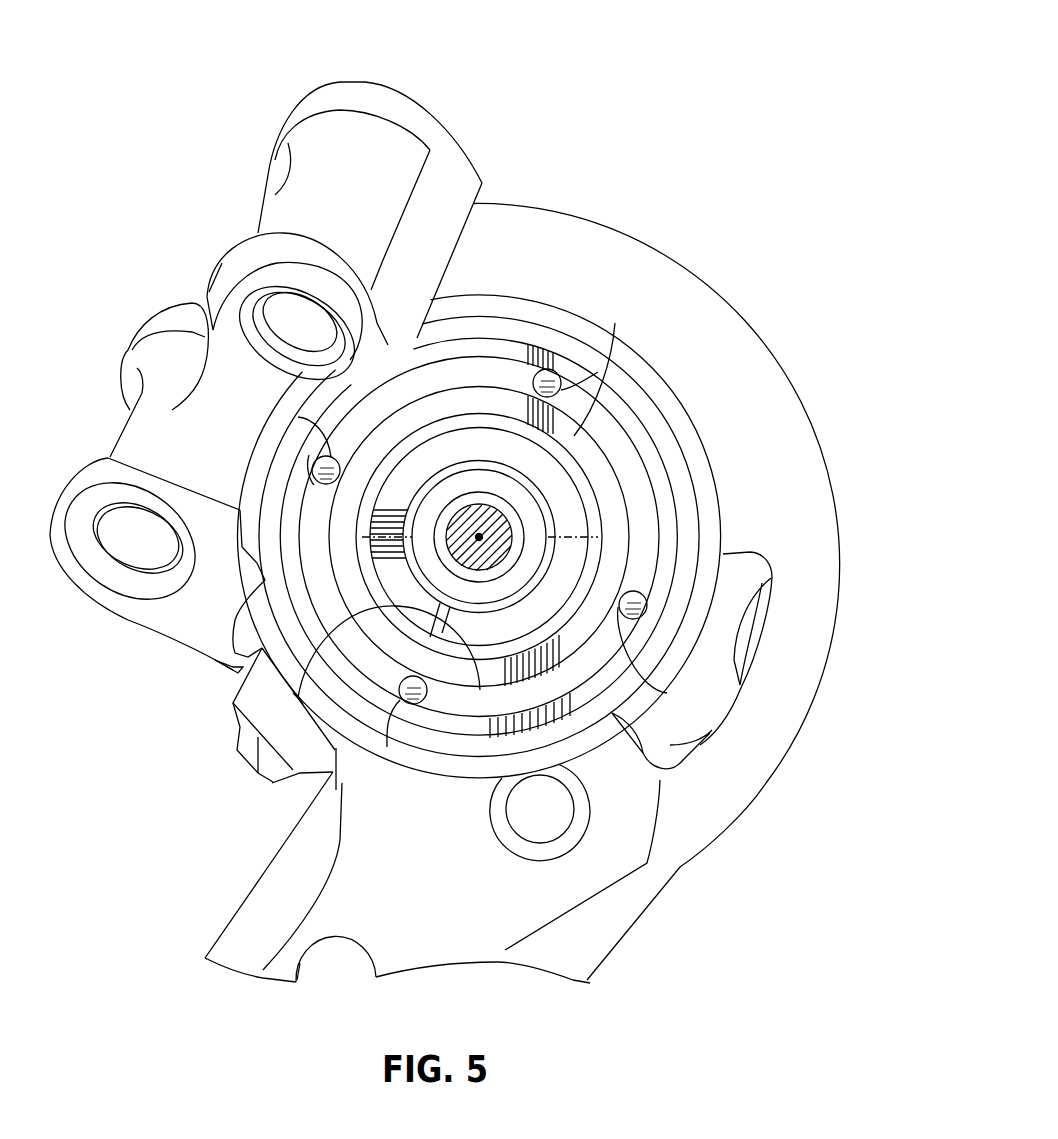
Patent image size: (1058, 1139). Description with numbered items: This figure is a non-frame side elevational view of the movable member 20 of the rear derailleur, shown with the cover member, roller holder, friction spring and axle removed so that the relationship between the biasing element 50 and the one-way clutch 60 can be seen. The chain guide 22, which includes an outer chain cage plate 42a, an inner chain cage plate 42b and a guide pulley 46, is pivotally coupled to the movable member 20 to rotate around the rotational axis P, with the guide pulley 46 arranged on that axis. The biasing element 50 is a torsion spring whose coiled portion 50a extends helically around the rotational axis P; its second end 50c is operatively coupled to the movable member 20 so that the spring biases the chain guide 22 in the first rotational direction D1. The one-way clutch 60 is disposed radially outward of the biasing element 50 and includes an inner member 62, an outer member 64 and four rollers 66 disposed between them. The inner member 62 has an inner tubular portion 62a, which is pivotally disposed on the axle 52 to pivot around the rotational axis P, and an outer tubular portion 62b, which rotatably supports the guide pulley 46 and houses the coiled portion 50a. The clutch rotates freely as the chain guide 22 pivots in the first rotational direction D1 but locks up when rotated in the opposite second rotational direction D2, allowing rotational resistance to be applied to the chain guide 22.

The movable member 20 is at (118, 425).
The chain guide 22 is at (258, 888).
The outer chain cage plate 42a is at (652, 897).
The inner chain cage plate 42b is at (607, 958).
The guide pulley 46 is at (267, 780).
The biasing element 50 is at (369, 568).
The coiled portion 50a is at (470, 630).
The second end 50c is at (298, 700).
The axle 52 is at (517, 514).
The one-way clutch 60 is at (686, 538).
The inner member 62 is at (631, 510).
The inner tubular portion 62a is at (492, 483).
The outer tubular portion 62b is at (640, 388).
The outer member 64 is at (648, 423).
The roller 66 is at (377, 770).
The rotational axis P is at (479, 537).
The first rotational direction D1 is at (783, 280).
The second rotational direction D2 is at (605, 168).